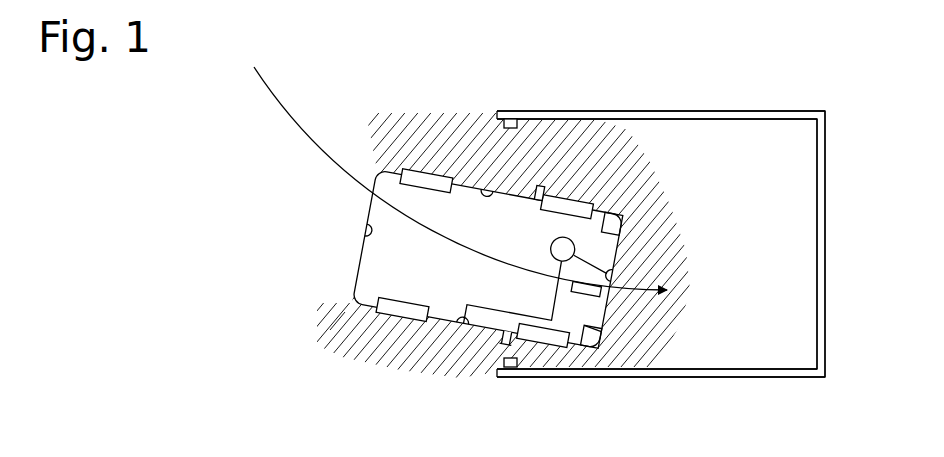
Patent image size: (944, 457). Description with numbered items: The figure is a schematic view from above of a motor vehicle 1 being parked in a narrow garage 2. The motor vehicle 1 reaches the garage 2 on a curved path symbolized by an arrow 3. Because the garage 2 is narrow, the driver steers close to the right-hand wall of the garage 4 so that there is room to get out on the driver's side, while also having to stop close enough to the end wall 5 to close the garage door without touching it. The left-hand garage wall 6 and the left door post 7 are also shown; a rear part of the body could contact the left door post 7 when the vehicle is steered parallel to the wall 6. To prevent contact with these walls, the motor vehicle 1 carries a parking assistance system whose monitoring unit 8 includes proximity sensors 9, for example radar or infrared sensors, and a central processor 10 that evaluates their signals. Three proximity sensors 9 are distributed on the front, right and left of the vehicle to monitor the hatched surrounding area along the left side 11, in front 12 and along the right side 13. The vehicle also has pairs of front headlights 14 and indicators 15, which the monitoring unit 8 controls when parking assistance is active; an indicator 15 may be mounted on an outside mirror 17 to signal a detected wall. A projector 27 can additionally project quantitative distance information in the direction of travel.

The motor vehicle 1 is at (387, 267).
The garage 2 is at (688, 76).
The arrow 3 is at (313, 148).
The right-hand wall of the garage 4 is at (553, 373).
The end wall 5 is at (826, 270).
The left-hand garage wall 6 is at (727, 112).
The left door post 7 is at (508, 119).
The monitoring unit 8 is at (520, 276).
The proximity sensor 9 is at (488, 185).
The central processor 10 is at (555, 247).
The left side 11 is at (596, 160).
The front 12 is at (598, 298).
The right side 13 is at (400, 353).
The front headlights 14 is at (617, 227).
The indicators 15 is at (620, 207).
The outside mirror 17 is at (507, 338).
The projector 27 is at (600, 332).